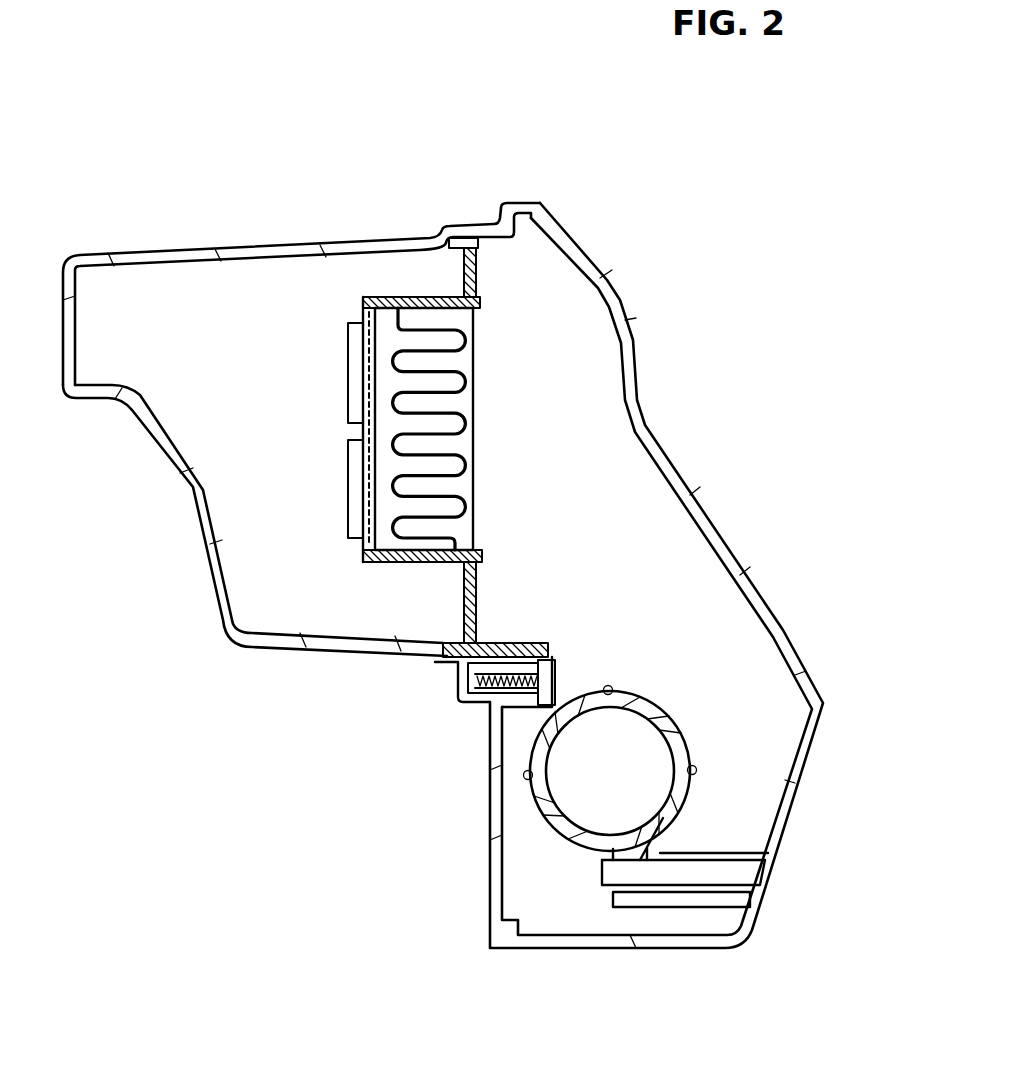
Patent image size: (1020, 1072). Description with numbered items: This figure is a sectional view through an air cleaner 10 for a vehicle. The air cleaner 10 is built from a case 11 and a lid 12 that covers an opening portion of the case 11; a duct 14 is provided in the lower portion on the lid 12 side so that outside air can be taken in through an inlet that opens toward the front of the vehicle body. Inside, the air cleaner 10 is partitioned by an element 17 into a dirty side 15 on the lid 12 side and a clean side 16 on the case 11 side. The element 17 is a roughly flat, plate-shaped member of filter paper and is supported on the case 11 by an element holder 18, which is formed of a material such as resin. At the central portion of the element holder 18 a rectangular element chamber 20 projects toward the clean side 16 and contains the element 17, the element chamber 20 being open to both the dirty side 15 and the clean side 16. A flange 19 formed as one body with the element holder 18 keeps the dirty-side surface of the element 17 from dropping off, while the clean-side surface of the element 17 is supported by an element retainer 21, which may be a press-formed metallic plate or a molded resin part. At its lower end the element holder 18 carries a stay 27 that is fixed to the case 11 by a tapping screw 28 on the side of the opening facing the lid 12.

The air cleaner 10 is at (255, 212).
The case 11 is at (180, 485).
The lid 12 is at (687, 495).
The duct 14 is at (540, 793).
The dirty side 15 is at (597, 481).
The clean side 16 is at (287, 457).
The element 17 is at (450, 380).
The element holder 18 is at (380, 586).
The flange 19 is at (480, 298).
The element chamber 20 is at (432, 318).
The element retainer 21 is at (352, 358).
The stay 27 is at (550, 657).
The tapping screw 28 is at (563, 682).